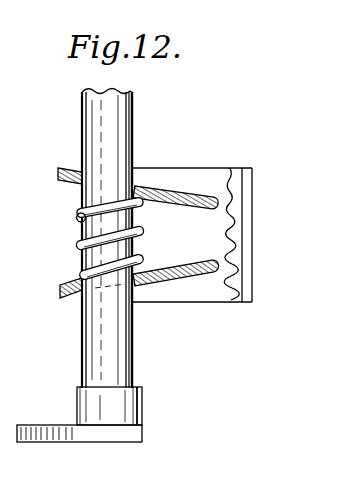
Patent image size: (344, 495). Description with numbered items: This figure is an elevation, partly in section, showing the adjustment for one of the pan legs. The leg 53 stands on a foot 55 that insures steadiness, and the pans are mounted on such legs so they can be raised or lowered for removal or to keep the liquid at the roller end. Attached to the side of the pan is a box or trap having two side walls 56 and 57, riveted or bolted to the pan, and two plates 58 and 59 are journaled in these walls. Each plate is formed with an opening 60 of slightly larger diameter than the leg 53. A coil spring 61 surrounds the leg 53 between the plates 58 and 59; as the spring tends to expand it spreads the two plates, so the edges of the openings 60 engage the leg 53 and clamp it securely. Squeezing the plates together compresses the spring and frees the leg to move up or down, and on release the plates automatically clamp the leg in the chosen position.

The leg 53 is at (122, 117).
The foot 55 is at (143, 396).
The side wall 56 is at (172, 177).
The side wall 57 is at (245, 250).
The plate 58 is at (178, 192).
The plate 59 is at (213, 276).
The opening 60 is at (137, 197).
The coil spring 61 is at (80, 213).